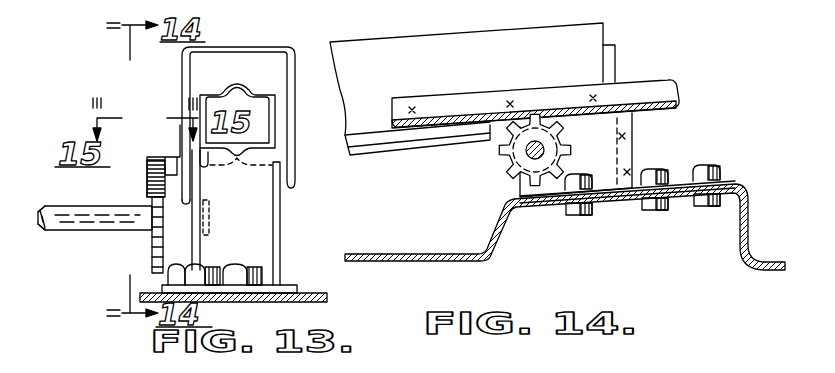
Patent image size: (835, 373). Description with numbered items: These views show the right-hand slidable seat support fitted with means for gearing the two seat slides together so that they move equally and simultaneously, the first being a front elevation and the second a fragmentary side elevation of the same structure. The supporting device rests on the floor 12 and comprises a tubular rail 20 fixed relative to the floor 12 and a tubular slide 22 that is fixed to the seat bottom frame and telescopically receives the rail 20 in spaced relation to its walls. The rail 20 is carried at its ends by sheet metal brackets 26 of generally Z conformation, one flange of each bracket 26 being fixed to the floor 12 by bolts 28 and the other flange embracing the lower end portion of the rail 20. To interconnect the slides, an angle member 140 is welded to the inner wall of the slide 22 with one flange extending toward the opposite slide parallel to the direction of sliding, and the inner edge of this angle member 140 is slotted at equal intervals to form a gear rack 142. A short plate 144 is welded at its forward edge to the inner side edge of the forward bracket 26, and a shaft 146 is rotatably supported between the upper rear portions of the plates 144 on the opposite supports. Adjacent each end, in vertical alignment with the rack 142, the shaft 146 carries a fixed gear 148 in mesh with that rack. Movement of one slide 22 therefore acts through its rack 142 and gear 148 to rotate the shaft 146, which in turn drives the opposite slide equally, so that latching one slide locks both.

In FIG. 13, the floor 12 is at (328, 284).
In FIG. 14, the floor 12 is at (436, 270).
In FIG. 13, the rail 20 is at (280, 120).
In FIG. 14, the rail 20 is at (617, 50).
In FIG. 13, the slide 22 is at (242, 47).
In FIG. 14, the slide 22 is at (500, 69).
In FIG. 13, the bracket 26 is at (283, 224).
In FIG. 14, the bracket 26 is at (676, 185).
In FIG. 13, the bolts 28 is at (262, 270).
In FIG. 14, the bolts 28 is at (710, 178).
In FIG. 13, the angle member 140 is at (180, 150).
In FIG. 14, the angle member 140 is at (655, 86).
In FIG. 13, the gear rack 142 is at (147, 178).
In FIG. 14, the gear rack 142 is at (668, 101).
In FIG. 13, the plate 144 is at (200, 246).
In FIG. 14, the plate 144 is at (633, 148).
In FIG. 13, the shaft 146 is at (72, 186).
In FIG. 14, the shaft 146 is at (528, 154).
In FIG. 13, the gear 148 is at (152, 250).
In FIG. 14, the gear 148 is at (516, 166).